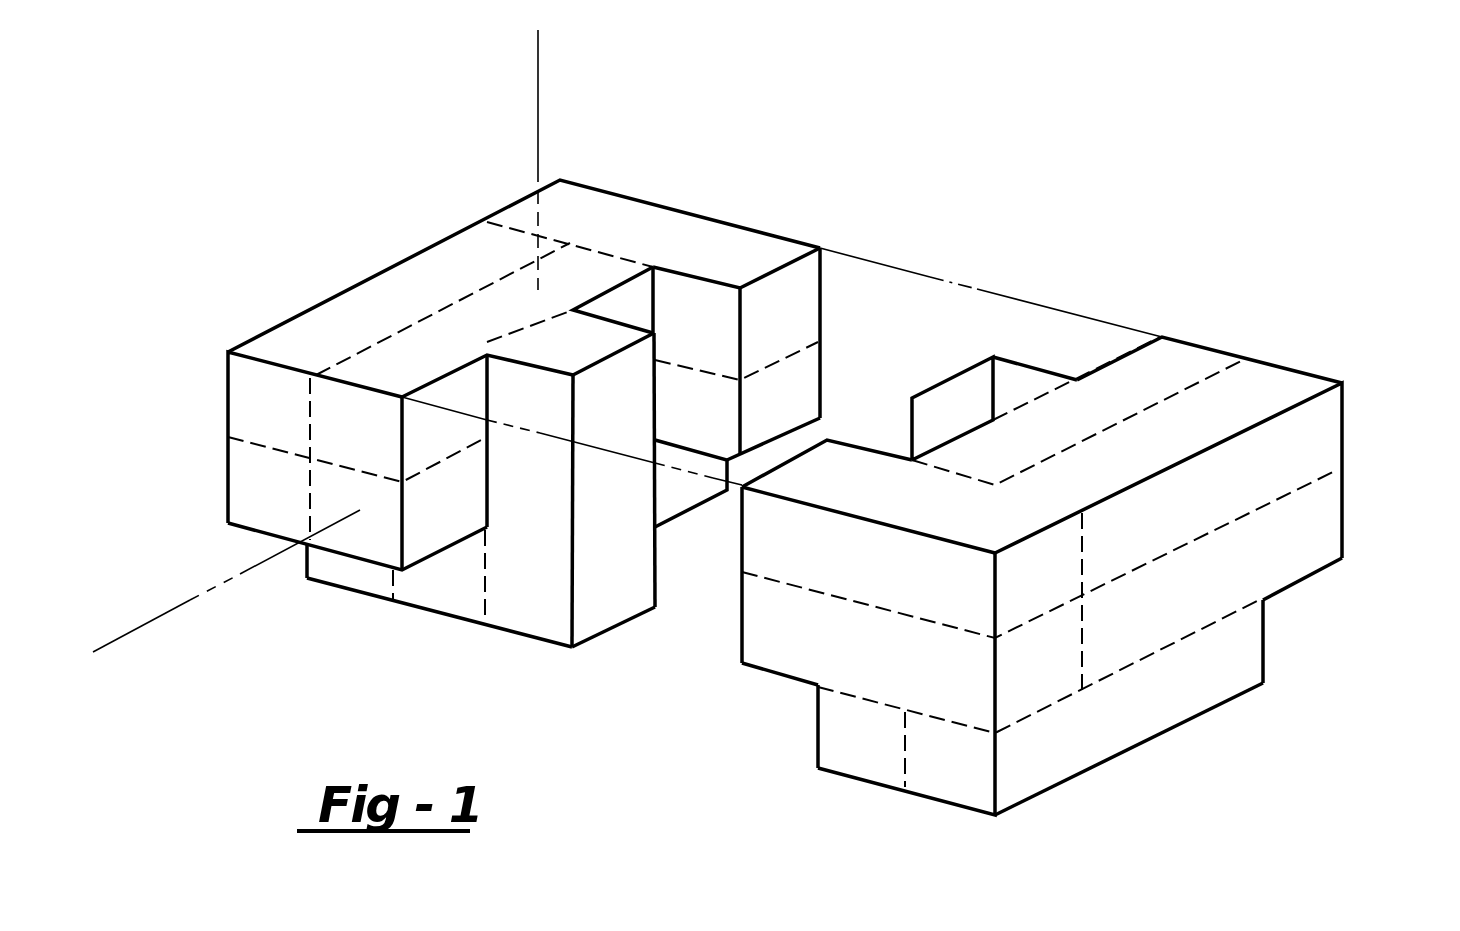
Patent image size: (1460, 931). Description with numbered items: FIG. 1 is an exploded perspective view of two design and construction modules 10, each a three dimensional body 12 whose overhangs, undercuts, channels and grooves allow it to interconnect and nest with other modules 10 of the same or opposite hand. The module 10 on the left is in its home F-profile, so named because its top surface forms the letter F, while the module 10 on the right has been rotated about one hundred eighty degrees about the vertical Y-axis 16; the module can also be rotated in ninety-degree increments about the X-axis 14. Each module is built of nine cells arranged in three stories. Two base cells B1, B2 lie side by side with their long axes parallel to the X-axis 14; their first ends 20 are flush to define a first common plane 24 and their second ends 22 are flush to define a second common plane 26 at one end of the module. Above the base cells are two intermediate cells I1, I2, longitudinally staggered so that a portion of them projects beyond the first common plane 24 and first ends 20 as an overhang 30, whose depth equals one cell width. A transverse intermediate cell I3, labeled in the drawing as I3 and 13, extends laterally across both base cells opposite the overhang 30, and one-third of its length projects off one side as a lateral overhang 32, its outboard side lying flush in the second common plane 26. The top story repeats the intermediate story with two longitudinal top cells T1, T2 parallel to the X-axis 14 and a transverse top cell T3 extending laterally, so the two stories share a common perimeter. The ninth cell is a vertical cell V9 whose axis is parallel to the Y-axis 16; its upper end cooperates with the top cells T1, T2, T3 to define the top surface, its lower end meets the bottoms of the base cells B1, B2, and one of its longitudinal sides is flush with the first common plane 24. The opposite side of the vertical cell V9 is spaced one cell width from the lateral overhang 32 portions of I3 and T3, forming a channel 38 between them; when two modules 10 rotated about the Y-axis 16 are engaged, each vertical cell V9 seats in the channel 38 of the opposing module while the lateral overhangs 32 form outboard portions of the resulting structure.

The module 10 is at (797, 488).
The three dimensional body 12 is at (797, 488).
The side face 13 is at (818, 372).
The X-axis 14 is at (248, 575).
The Y-axis 16 is at (537, 114).
The first ends 20 is at (343, 595).
The second ends 22 is at (857, 783).
The first common plane 24 is at (463, 592).
The second common plane 26 is at (870, 737).
The overhang 30 is at (253, 533).
The lateral overhang 32 is at (812, 430).
The channel 38 is at (653, 293).
The top cell T1 is at (470, 322).
The top cell T2 is at (320, 338).
The transverse top cell T3 is at (743, 258).
The base cell B1 is at (677, 487).
The base cell B2 is at (322, 572).
The intermediate cell I1 is at (410, 543).
The intermediate cell I2 is at (243, 470).
The transverse intermediate cell I3 is at (951, 412).
The vertical cell V9 is at (588, 587).